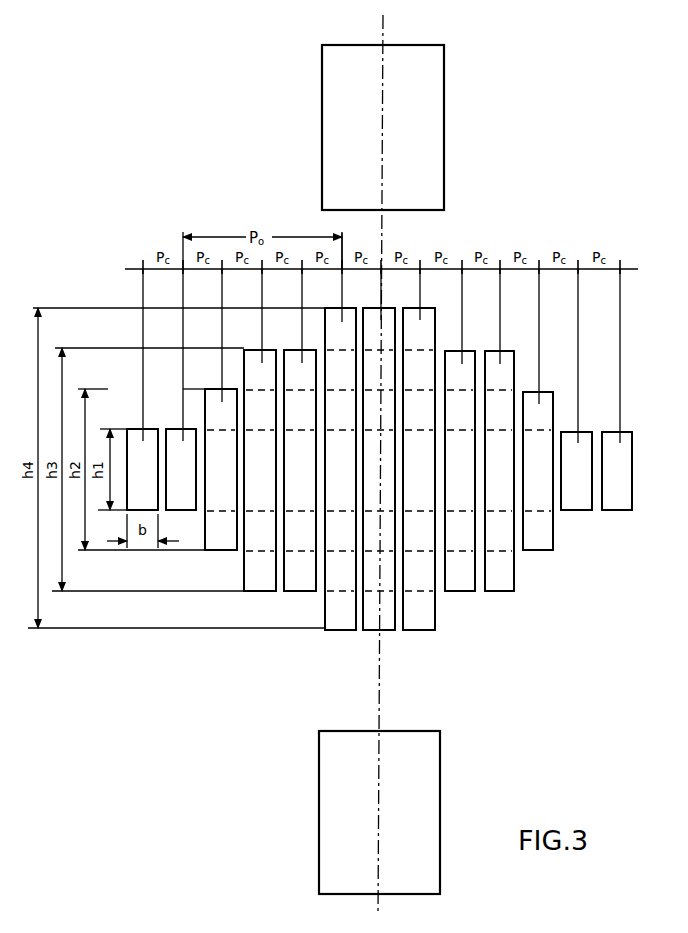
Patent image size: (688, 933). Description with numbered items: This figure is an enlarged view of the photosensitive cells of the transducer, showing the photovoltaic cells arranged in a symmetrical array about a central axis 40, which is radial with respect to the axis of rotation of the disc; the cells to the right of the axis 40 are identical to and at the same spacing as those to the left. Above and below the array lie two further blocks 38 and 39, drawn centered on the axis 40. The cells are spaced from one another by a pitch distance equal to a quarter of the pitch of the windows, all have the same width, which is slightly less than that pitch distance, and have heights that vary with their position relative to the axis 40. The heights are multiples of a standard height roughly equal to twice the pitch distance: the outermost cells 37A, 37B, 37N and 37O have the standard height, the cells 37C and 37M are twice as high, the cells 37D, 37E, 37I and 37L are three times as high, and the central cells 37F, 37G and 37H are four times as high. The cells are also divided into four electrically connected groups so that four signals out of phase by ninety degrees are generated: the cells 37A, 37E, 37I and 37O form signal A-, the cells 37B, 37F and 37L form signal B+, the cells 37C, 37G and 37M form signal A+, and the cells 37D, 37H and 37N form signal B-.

The photovoltaic cell 37A is at (137, 437).
The photovoltaic cell 37B is at (175, 437).
The photovoltaic cell 37C is at (218, 398).
The photovoltaic cell 37D is at (258, 362).
The photovoltaic cell 37E is at (298, 362).
The photovoltaic cell 37F is at (333, 322).
The photovoltaic cell 37G is at (372, 318).
The photovoltaic cell 37H is at (421, 317).
The photovoltaic cell 37I is at (461, 362).
The photovoltaic cell 37L is at (501, 361).
The photovoltaic cell 37M is at (540, 402).
The photovoltaic cell 37N is at (579, 440).
The photovoltaic cell 37O is at (621, 440).
The upper magnet 38 is at (435, 166).
The lower magnet 39 is at (430, 802).
The axis 40 is at (380, 680).